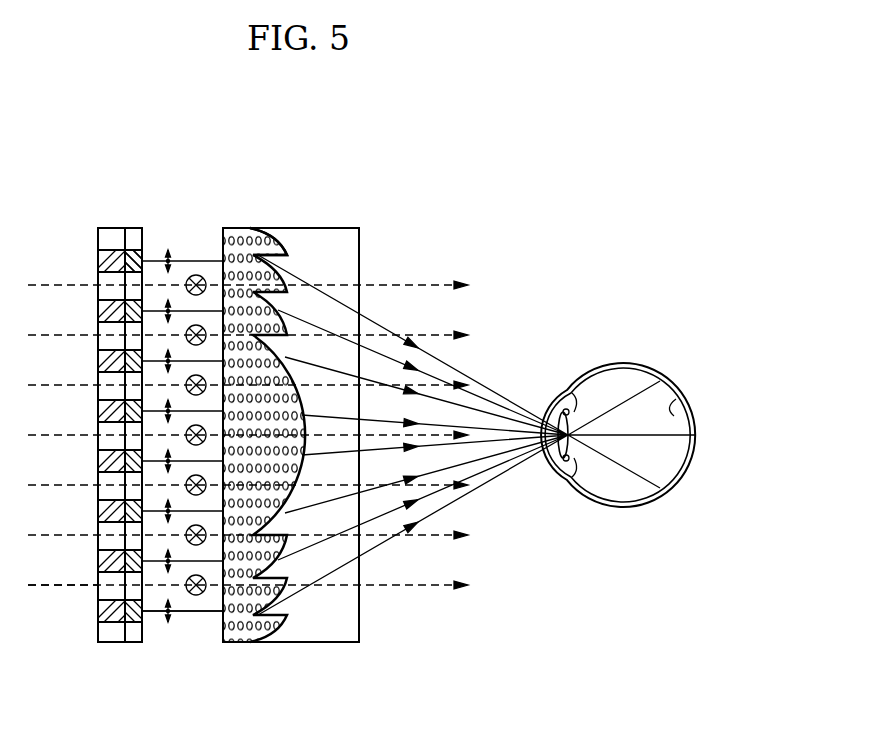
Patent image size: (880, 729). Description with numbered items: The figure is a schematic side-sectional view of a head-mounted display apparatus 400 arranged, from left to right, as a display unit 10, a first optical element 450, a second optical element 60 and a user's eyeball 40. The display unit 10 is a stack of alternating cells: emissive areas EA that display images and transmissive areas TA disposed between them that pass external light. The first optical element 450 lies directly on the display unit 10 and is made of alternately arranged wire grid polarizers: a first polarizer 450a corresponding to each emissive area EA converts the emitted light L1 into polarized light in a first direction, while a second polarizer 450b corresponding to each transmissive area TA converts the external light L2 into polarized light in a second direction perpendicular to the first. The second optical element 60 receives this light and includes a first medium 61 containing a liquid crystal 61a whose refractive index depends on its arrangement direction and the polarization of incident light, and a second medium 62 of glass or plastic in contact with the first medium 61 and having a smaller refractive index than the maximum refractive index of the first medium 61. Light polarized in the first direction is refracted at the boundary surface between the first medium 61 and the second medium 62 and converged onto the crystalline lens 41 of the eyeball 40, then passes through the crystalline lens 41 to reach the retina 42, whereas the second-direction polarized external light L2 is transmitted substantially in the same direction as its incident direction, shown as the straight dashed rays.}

The display unit 10 is at (104, 226).
The first optical element 450 is at (133, 226).
The first polarizer 450a is at (142, 258).
The second polarizer 450b is at (137, 237).
The transmissive area TA is at (106, 240).
The emissive area EA is at (100, 257).
The light emitted from the emissive areas L1 is at (188, 612).
The external light L2 is at (52, 583).
The second optical element 60 is at (340, 210).
The first medium 61 is at (276, 634).
The liquid crystal 61a is at (264, 236).
The second medium 62 is at (313, 237).
The head-mounted display apparatus 400 is at (500, 170).
The user's eyeball 40 is at (643, 358).
The crystalline lens 41 is at (568, 410).
The retina 42 is at (679, 398).